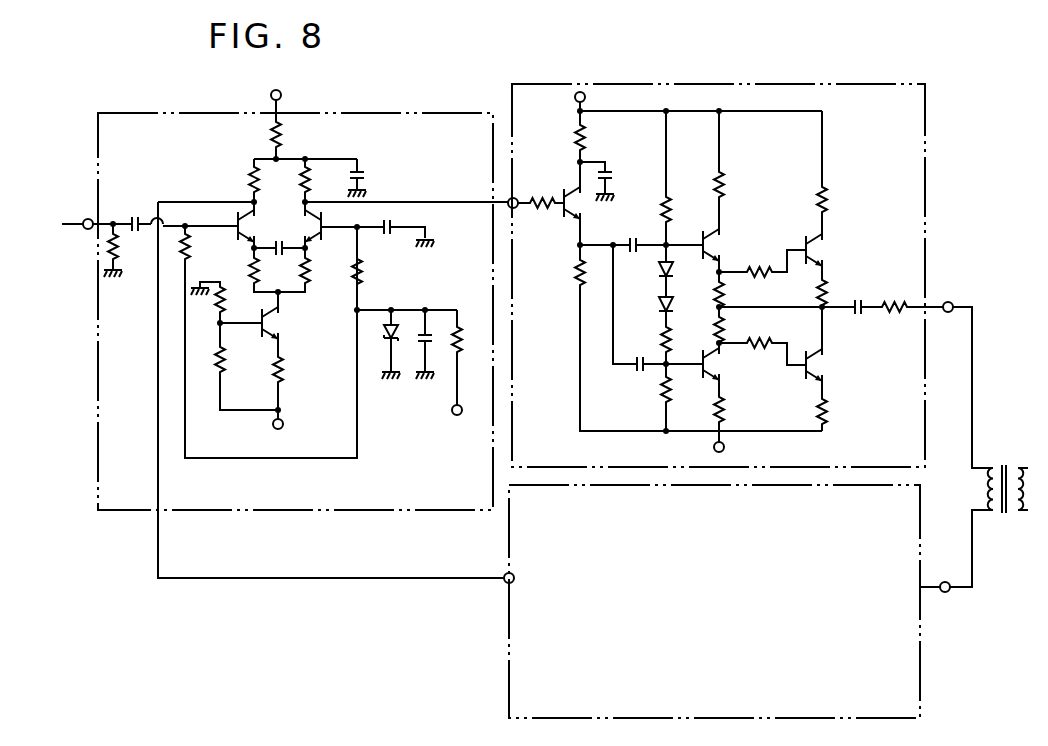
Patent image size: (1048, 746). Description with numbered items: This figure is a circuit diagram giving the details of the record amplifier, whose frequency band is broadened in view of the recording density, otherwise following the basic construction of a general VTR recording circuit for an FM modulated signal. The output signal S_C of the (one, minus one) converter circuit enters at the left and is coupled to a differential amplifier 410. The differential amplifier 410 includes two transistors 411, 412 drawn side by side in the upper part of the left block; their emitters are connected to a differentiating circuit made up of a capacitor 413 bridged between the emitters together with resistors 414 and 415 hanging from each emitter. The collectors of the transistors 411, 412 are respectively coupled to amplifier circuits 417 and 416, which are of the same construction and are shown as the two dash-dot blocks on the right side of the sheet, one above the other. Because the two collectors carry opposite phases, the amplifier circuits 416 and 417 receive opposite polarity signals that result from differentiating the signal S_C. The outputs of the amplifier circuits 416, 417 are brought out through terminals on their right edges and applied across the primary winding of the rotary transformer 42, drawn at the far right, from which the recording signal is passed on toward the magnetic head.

The differential amplifier 410 is at (440, 113).
The transistor 411 is at (242, 243).
The transistor 412 is at (318, 232).
The capacitor 413 is at (277, 243).
The resistor 414 is at (258, 273).
The resistor 415 is at (311, 277).
The amplifier circuit 416 is at (925, 228).
The amplifier circuit 417 is at (921, 696).
The rotary transformer 42 is at (1006, 514).